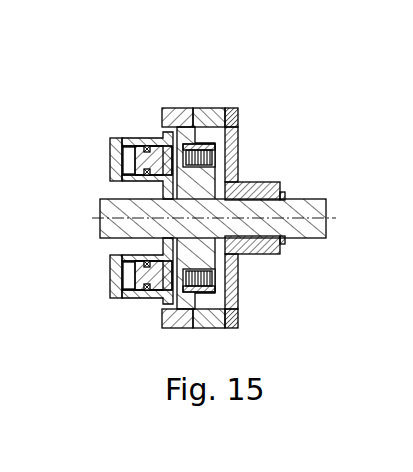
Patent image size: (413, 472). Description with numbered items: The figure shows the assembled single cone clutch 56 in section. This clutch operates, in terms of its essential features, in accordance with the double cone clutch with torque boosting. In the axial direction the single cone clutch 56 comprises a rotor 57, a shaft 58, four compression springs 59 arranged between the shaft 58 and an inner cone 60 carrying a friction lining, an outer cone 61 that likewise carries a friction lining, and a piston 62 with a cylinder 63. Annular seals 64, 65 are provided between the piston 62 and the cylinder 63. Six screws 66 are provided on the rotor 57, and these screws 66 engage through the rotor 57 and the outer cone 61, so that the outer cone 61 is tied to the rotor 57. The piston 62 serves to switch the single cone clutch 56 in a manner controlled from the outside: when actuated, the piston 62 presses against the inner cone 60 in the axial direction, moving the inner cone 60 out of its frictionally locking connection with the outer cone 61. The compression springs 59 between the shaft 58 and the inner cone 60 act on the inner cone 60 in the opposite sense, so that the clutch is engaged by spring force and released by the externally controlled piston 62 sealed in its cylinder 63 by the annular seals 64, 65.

The single cone clutch 56 is at (323, 117).
The rotor 57 is at (206, 108).
The shaft 58 is at (304, 192).
The compression springs 59 is at (212, 153).
The inner cone 60 is at (160, 141).
The outer cone 61 is at (170, 108).
The piston 62 is at (122, 163).
The cylinder 63 is at (115, 138).
The annular seal 64 is at (122, 272).
The annular seal 65 is at (147, 290).
The screws 66 is at (232, 108).